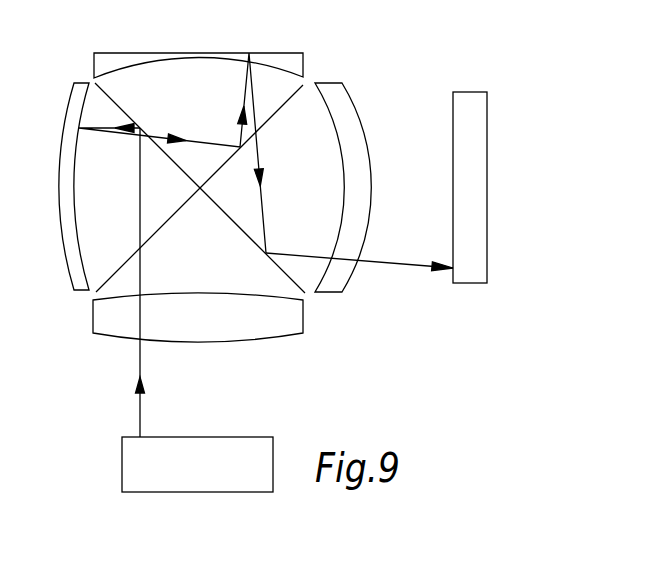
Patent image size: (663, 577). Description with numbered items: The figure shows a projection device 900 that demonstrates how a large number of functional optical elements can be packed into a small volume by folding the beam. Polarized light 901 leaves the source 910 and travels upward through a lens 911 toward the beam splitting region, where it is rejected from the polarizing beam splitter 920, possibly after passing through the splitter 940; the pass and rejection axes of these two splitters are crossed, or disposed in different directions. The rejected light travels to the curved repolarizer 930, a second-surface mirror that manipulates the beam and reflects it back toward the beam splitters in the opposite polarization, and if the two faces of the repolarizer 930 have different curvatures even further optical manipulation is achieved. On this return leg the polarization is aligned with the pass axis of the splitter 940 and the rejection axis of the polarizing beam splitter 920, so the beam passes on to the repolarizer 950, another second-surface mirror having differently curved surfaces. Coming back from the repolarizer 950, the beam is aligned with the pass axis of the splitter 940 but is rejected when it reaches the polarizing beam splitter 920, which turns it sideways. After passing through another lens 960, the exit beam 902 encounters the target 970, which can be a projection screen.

The projection device 900 is at (515, 47).
The polarized light 901 is at (142, 422).
The exit beam 902 is at (390, 262).
The source 910 is at (122, 460).
The lens 911 is at (93, 317).
The polarizing beam splitter 920 is at (279, 268).
The curved repolarizer 930 is at (72, 112).
The splitter 940 is at (141, 254).
The repolarizer 950 is at (132, 53).
The lens 960 is at (365, 153).
The target 970 is at (476, 92).